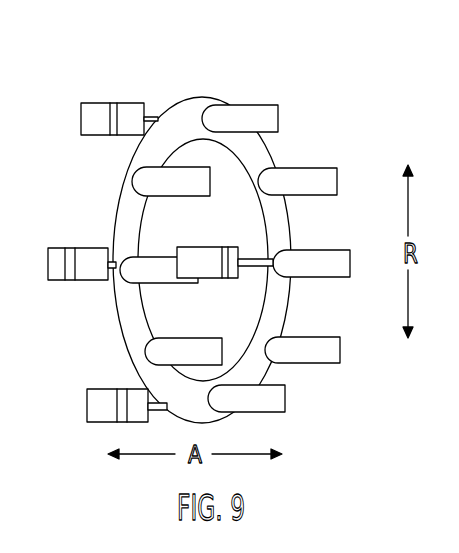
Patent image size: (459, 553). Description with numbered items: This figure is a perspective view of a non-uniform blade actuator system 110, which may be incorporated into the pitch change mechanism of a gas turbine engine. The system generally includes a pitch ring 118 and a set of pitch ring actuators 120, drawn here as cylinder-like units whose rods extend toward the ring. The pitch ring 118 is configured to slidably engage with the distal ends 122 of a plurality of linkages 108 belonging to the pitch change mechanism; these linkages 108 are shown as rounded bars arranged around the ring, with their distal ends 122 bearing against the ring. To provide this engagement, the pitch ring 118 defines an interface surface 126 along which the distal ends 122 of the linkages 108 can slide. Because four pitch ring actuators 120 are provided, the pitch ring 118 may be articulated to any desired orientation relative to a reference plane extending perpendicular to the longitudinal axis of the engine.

The non-uniform blade actuator system 110 is at (199, 217).
The linkages 108 is at (258, 118).
The pitch ring 118 is at (278, 218).
The pitch ring actuators 120 is at (100, 135).
The distal ends 122 is at (192, 115).
The interface surface 126 is at (135, 312).